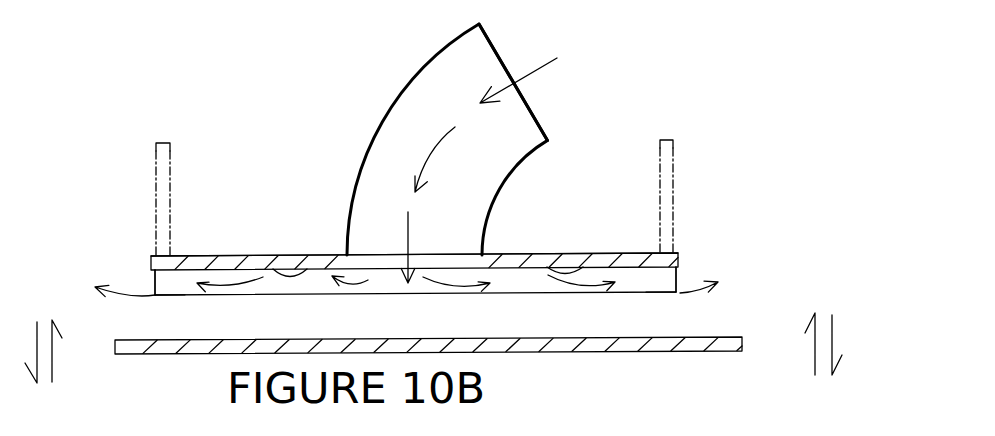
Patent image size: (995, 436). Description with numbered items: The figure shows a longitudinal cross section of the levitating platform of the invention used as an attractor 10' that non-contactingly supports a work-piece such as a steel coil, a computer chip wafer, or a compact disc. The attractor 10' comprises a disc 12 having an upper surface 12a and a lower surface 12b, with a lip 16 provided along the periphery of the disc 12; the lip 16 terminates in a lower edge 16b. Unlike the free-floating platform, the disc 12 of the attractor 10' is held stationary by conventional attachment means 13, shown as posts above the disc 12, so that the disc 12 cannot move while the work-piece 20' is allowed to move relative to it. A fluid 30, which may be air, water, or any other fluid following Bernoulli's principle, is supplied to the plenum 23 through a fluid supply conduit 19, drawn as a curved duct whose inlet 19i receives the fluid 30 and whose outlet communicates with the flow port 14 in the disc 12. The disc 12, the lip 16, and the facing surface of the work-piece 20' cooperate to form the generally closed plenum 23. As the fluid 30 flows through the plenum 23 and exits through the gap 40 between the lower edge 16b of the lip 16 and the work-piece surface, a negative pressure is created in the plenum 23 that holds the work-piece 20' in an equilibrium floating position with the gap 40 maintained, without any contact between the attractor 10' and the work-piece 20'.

The attractor 10' is at (443, 193).
The disc 12 is at (190, 263).
The upper surface 12a is at (255, 255).
The lower surface 12b is at (312, 263).
The attachment means 13 is at (160, 192).
The flow port 14 is at (372, 255).
The lip 16 is at (152, 283).
The lower edge 16b is at (150, 293).
The fluid supply conduit 19 is at (380, 123).
The nozzle inlet 19i is at (502, 58).
The substrate 20' is at (466, 372).
The plenum 23 is at (517, 308).
The fluid 30 is at (520, 80).
The gap 40 is at (175, 333).